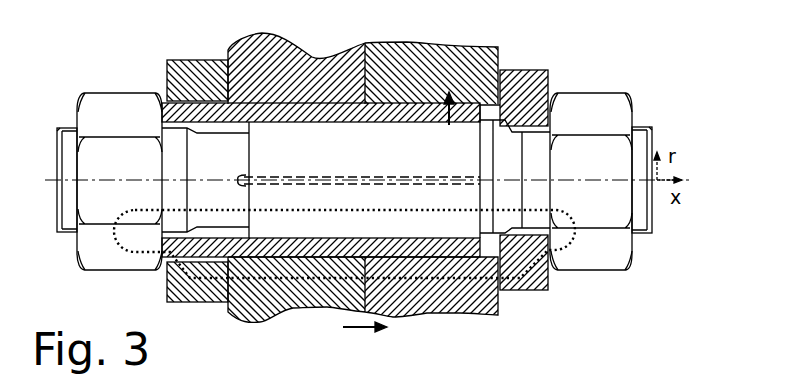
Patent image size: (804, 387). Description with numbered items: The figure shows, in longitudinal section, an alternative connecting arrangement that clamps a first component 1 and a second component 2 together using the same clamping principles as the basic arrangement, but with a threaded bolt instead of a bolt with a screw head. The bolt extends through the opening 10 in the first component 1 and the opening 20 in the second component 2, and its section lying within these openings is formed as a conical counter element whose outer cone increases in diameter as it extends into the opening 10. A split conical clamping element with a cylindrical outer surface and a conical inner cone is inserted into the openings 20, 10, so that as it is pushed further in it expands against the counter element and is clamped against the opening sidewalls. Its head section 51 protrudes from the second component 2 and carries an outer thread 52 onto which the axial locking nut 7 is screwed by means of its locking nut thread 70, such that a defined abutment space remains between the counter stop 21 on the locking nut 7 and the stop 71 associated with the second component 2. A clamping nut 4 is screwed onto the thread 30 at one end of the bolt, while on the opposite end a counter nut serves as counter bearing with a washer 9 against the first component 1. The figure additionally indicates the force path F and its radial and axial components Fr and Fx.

The first component 1 is at (500, 315).
The second component 2 is at (347, 308).
The clamping nut 4 is at (90, 93).
The axial locking nut 7 is at (167, 60).
The washer 9 is at (548, 71).
The opening 10 is at (401, 249).
The opening 20 is at (262, 293).
The surface serving as counter stop 21 is at (230, 310).
The thread 30 is at (72, 128).
The head section 51 is at (161, 260).
The outer thread 52 is at (165, 103).
The locking nut thread 70 is at (180, 101).
The stop 71 is at (240, 54).
The force flow path F is at (570, 250).
The radial force Fr is at (457, 129).
The axial force Fx is at (365, 337).